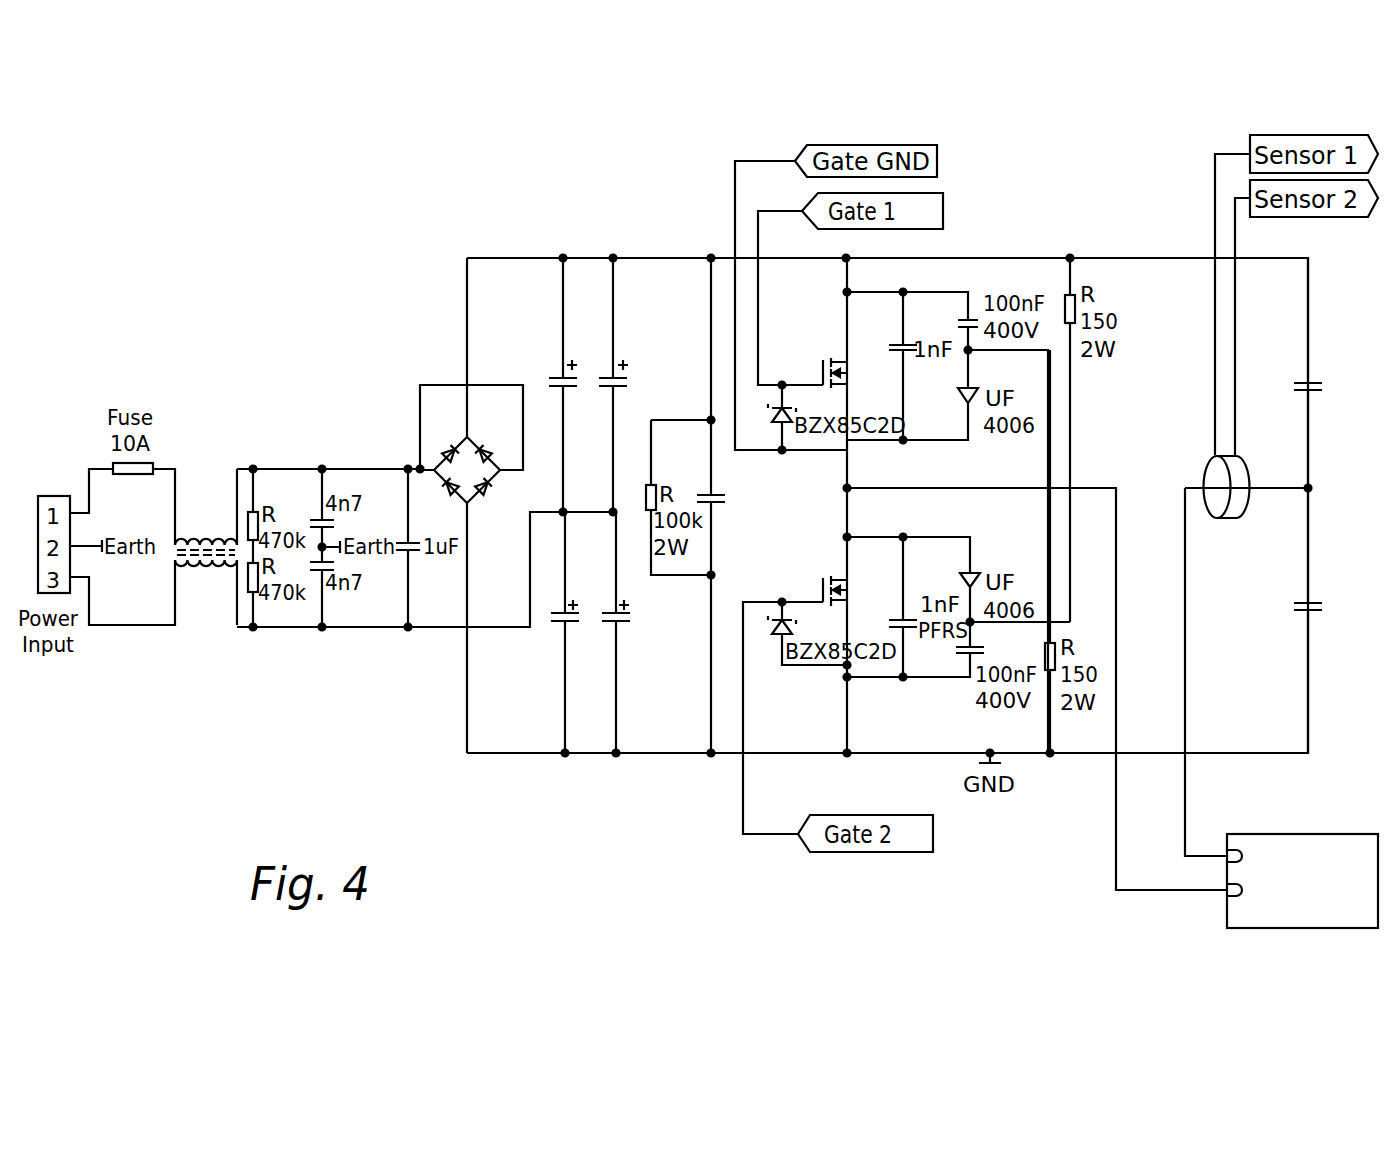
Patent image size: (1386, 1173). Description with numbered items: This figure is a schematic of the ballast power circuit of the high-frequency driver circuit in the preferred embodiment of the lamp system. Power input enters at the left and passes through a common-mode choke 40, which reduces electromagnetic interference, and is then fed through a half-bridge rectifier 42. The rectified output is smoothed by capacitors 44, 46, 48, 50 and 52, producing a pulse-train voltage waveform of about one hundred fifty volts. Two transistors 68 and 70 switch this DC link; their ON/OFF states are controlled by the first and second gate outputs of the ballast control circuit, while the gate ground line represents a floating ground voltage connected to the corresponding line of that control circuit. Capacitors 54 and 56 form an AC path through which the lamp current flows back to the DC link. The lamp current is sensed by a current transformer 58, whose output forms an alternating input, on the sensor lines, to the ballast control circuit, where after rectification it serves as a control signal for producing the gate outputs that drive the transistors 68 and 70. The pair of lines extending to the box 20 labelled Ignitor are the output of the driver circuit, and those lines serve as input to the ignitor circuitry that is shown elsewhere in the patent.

The box 20 is at (1318, 832).
The common-mode choke 40 is at (204, 532).
The half-bridge rectifier 42 is at (430, 450).
The capacitor 44 is at (718, 508).
The capacitor 46 is at (550, 373).
The capacitor 48 is at (624, 373).
The capacitor 50 is at (550, 628).
The capacitor 52 is at (628, 632).
The capacitor 54 is at (1323, 381).
The capacitor 56 is at (1326, 587).
The current transformer 58 is at (1247, 458).
The transistor 68 is at (832, 356).
The transistor 70 is at (830, 577).